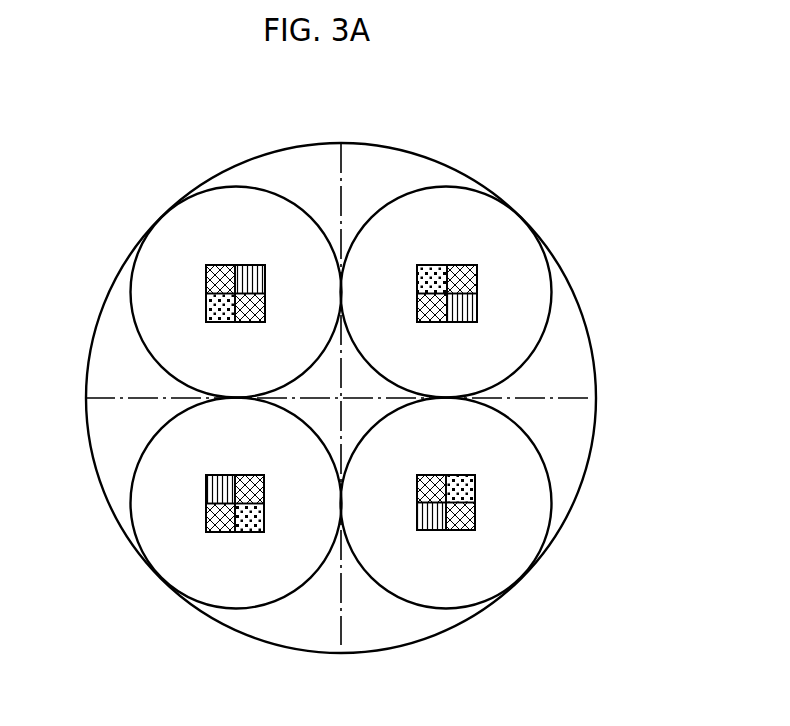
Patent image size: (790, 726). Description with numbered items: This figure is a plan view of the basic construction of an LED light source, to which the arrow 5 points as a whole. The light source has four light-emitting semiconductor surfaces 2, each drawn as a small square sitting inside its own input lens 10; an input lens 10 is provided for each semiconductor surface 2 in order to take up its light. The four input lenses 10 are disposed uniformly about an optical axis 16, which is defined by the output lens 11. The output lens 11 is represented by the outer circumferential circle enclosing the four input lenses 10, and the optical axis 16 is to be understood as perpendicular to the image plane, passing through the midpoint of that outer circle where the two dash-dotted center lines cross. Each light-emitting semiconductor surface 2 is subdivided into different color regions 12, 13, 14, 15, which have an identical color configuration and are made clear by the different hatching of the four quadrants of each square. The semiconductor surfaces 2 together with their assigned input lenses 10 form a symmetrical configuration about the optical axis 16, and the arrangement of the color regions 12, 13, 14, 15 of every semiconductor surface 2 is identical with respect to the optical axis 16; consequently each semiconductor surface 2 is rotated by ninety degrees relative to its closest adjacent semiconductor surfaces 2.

The light-emitting semiconductor surface 2 is at (478, 278).
The cable 5 is at (655, 397).
The input lens 10 is at (175, 230).
The output lens 11 is at (392, 163).
The color region 12 is at (462, 487).
The color region 13 is at (477, 518).
The color region 14 is at (438, 520).
The color region 15 is at (418, 485).
The optical axis 16 is at (340, 398).